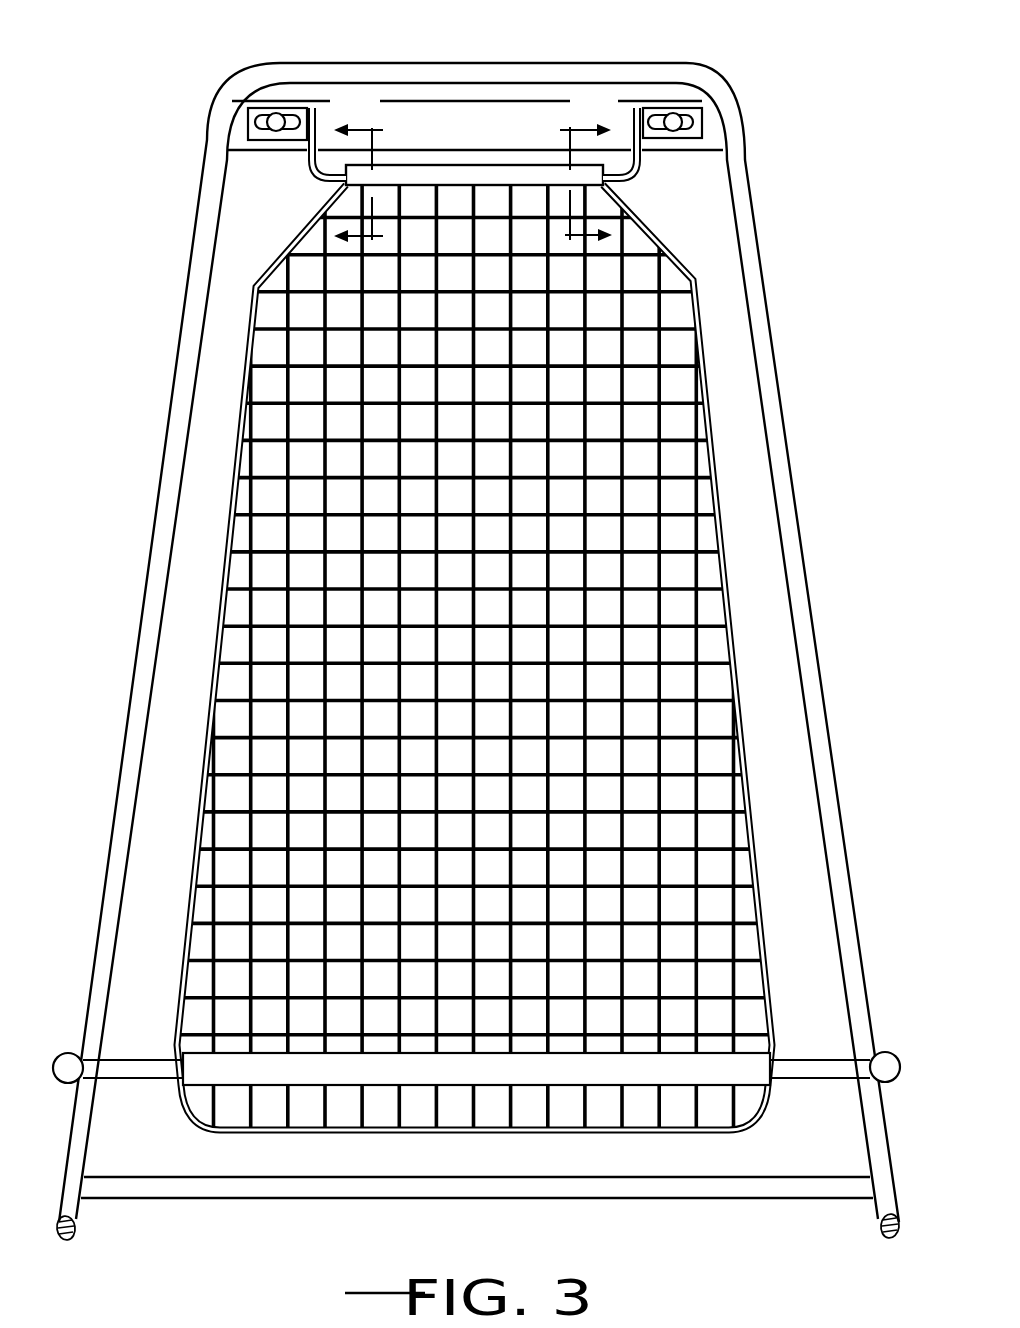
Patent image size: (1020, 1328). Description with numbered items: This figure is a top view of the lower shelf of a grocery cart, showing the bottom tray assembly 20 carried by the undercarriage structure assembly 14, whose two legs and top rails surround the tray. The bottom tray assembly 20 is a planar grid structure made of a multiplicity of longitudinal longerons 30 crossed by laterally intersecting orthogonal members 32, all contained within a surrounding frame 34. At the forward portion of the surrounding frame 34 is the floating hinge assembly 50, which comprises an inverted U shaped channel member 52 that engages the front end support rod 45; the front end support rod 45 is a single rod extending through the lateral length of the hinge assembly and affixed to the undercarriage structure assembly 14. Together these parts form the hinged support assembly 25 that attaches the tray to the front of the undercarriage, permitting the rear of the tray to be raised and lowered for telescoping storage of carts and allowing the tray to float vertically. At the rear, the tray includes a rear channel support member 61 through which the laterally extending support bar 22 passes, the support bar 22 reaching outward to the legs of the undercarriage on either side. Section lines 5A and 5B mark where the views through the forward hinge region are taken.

The undercarriage structure assembly 14 is at (845, 805).
The bottom tray assembly 20 is at (506, 657).
The support bar 22 is at (127, 1080).
The hinged support assembly 25 is at (635, 172).
The longitudinal longerons 30 is at (703, 755).
The orthogonal members 32 is at (710, 890).
The surrounding frame 34 is at (708, 415).
The front end support rod 45 is at (518, 155).
The floating hinge assembly 50 is at (474, 92).
The inverted U shaped channel member 52 is at (428, 172).
The rear channel support member 61 is at (748, 1067).
The section line 5A is at (358, 183).
The section line 5B is at (586, 185).